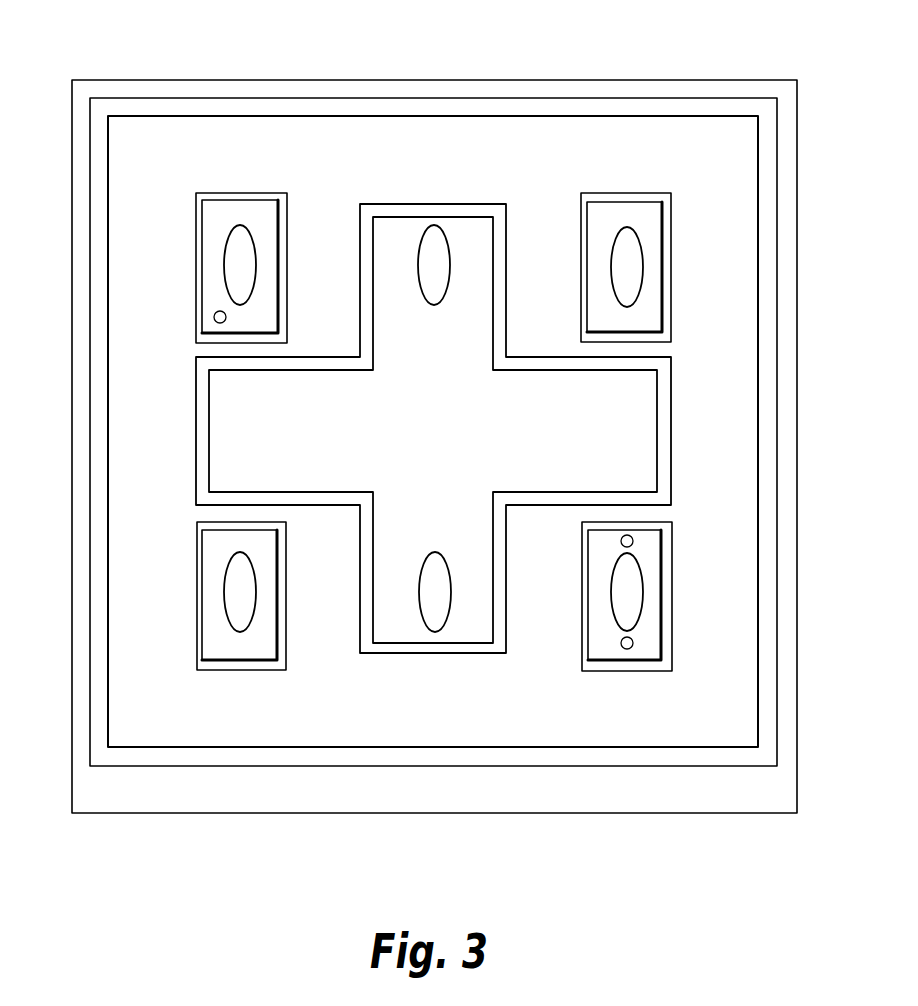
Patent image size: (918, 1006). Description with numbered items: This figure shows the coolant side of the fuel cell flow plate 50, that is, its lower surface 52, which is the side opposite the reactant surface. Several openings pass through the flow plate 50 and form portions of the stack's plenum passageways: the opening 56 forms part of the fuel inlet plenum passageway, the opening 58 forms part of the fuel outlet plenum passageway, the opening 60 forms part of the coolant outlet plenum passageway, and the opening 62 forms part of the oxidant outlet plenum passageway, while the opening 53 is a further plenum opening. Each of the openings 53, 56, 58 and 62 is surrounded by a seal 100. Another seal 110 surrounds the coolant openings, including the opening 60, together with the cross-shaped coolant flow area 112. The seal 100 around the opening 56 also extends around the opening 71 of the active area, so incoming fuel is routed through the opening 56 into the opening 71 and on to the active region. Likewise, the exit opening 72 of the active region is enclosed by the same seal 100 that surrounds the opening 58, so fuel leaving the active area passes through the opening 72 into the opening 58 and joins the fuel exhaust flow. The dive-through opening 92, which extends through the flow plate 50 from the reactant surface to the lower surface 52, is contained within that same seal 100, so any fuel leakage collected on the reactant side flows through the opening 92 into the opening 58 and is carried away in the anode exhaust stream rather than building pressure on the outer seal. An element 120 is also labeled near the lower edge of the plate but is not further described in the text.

The flow plate 50 is at (683, 79).
The lower surface 52 is at (178, 807).
The opening 53 is at (617, 242).
The opening 56 is at (232, 238).
The opening 58 is at (625, 575).
The opening 60 is at (430, 580).
The opening 62 is at (243, 580).
The opening 71 is at (214, 317).
The exit opening 72 is at (633, 536).
The opening 92 is at (633, 641).
The seal 100 is at (196, 225).
The seal 110 is at (506, 265).
The coolant flow area 112 is at (563, 443).
The perimeter trace 120 is at (450, 767).